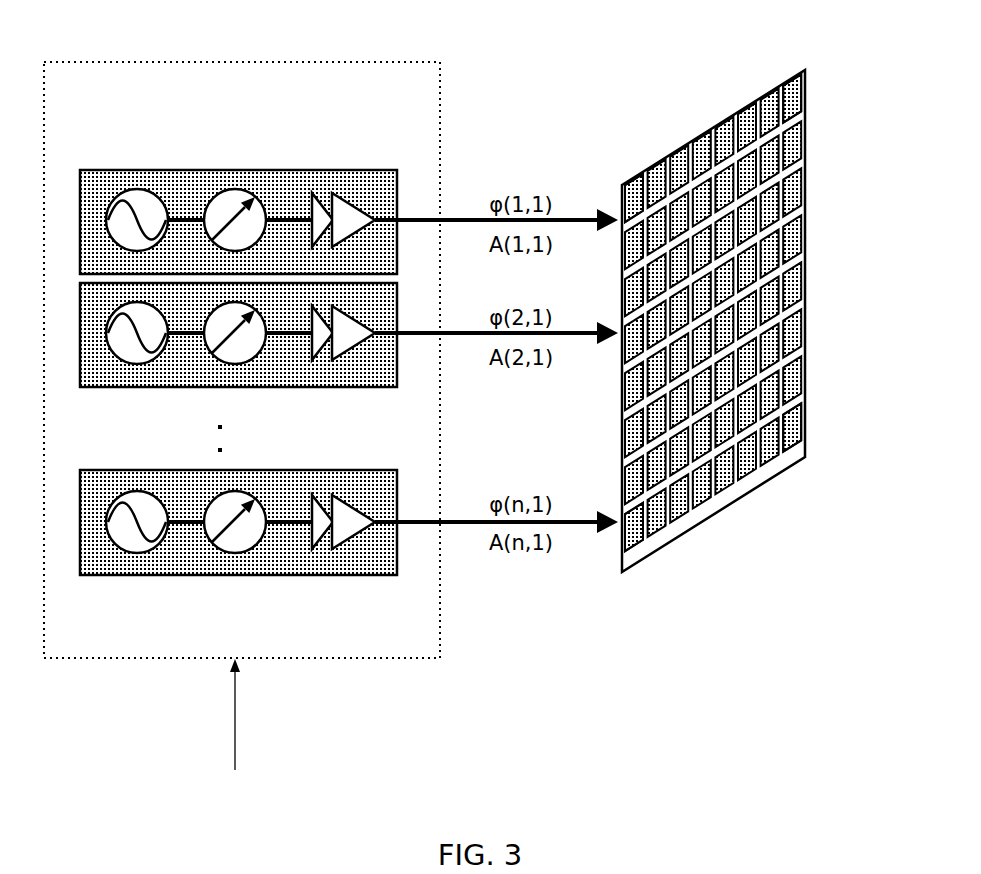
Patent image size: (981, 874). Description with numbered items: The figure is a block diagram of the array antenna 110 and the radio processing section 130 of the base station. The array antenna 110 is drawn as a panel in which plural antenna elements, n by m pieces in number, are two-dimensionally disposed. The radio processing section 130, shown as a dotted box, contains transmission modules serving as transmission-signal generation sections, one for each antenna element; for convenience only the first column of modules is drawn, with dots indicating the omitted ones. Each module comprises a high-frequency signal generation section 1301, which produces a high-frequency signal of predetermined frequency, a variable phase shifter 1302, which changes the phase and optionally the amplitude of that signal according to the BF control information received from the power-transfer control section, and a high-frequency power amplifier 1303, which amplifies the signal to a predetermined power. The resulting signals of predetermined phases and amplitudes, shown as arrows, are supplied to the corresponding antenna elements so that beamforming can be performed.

The radio processing section 130 is at (222, 62).
The high-frequency signal generation section 1301 is at (137, 188).
The variable phase shifter 1302 is at (252, 187).
The high-frequency power amplifier 1303 is at (347, 200).
The array antenna 110 is at (694, 109).